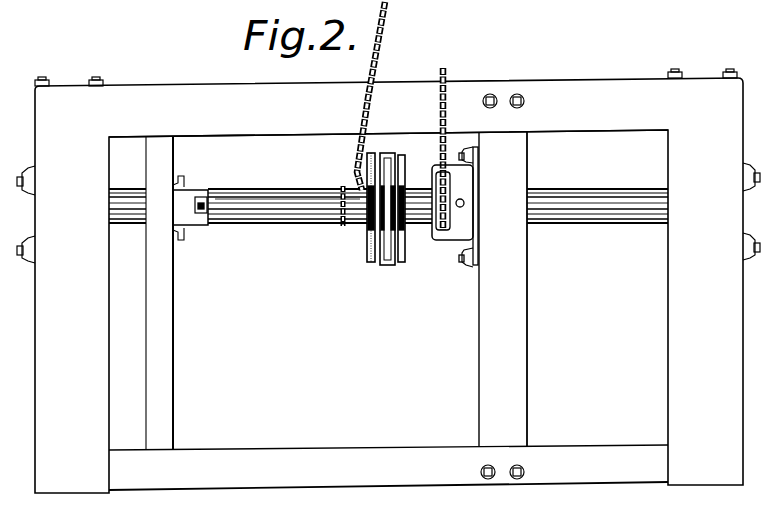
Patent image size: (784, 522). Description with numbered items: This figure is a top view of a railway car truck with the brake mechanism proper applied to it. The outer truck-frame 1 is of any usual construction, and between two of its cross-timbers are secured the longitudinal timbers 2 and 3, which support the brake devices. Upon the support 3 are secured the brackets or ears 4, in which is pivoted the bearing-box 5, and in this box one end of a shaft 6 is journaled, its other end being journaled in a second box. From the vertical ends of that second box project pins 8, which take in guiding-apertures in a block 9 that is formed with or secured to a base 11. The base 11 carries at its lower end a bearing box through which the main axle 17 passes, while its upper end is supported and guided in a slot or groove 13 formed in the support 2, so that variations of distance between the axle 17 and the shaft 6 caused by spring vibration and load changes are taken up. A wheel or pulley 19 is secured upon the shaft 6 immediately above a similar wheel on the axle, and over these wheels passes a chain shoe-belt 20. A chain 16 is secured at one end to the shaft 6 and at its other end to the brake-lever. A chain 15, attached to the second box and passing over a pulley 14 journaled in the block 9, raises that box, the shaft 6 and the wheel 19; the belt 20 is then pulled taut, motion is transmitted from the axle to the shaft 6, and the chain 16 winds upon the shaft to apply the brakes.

The outer truck-frame 1 is at (388, 281).
The longitudinal timber 2 is at (503, 289).
The longitudinal timber 3 is at (159, 293).
The brackets or ears 4 is at (190, 189).
The bearing-box 5 is at (201, 214).
The shaft 6 is at (264, 211).
The pins 8 is at (462, 210).
The block 9 is at (452, 202).
The base 11 is at (477, 233).
The slot or groove 13 is at (471, 156).
The pulley 14 is at (437, 229).
The chain 15 is at (446, 232).
The chain 16 is at (356, 170).
The axle 17 is at (278, 191).
The band wheel or pulley 19 is at (369, 258).
The chain shoe-belt 20 is at (388, 262).